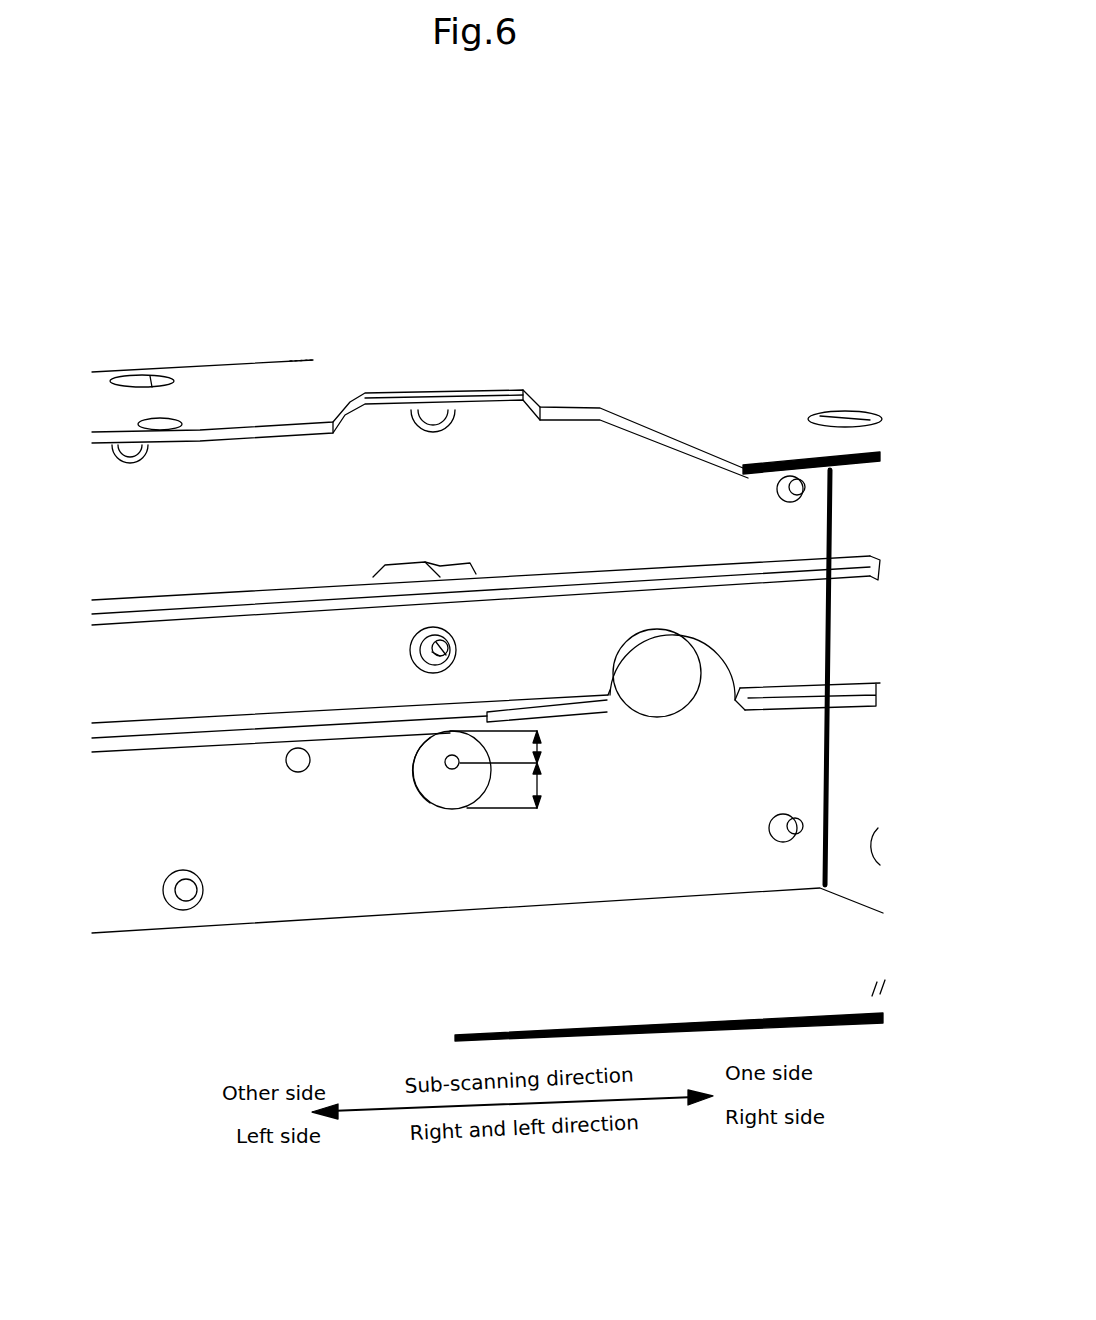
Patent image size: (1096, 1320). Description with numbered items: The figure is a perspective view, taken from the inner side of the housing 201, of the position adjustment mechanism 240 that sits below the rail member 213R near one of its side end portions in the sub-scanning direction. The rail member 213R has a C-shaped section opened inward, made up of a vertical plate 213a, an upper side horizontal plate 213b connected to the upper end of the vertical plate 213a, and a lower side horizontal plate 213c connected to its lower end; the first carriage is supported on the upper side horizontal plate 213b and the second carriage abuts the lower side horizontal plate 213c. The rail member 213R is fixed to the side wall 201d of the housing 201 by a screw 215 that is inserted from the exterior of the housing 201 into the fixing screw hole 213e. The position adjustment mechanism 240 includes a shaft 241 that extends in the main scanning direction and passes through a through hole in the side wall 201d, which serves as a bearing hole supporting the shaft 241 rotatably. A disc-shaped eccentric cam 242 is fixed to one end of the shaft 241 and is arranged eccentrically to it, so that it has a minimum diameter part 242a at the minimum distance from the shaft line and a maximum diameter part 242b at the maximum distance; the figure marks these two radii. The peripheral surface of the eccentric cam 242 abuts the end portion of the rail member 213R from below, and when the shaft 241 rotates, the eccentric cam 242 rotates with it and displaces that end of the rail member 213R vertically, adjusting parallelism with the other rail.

The housing 201 is at (253, 362).
The side wall 201d is at (520, 428).
The rail member 213R is at (318, 520).
The vertical plate 213a is at (193, 678).
The upper side horizontal plate 213b is at (263, 603).
The lower side horizontal plate 213c is at (147, 730).
The fixing screw hole 213e is at (430, 653).
The screw 215 is at (455, 652).
The position adjustment mechanism 240 is at (446, 792).
The shaft 241 is at (448, 770).
The eccentric cam 242 is at (440, 768).
The minimum diameter part 242a is at (452, 733).
The maximum diameter part 242b is at (451, 815).